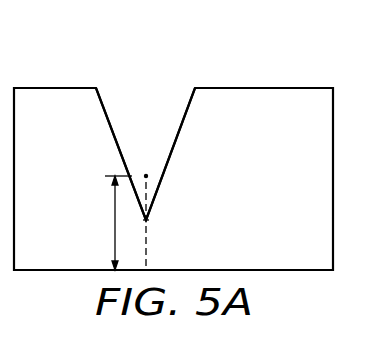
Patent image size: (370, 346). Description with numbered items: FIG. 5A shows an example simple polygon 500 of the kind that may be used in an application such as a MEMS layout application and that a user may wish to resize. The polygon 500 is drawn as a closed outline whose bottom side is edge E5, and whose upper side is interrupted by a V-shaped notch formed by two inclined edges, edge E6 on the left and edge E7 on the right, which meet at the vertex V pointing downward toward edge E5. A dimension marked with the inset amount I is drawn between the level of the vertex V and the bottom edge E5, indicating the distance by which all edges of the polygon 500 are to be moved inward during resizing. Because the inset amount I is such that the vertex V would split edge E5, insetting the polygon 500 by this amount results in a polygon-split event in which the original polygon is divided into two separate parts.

The simple polygon 500 is at (272, 67).
The edge E6 is at (107, 112).
The edge E7 is at (185, 112).
The edge E5 is at (293, 271).
The vertex V is at (147, 221).
The inset amount I is at (117, 223).